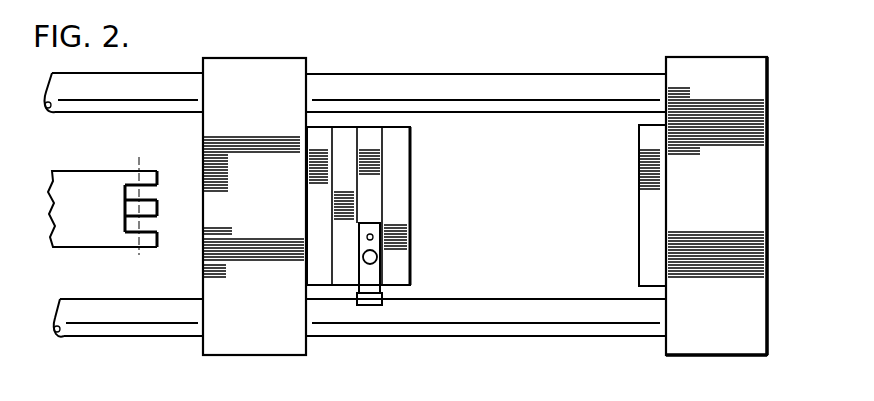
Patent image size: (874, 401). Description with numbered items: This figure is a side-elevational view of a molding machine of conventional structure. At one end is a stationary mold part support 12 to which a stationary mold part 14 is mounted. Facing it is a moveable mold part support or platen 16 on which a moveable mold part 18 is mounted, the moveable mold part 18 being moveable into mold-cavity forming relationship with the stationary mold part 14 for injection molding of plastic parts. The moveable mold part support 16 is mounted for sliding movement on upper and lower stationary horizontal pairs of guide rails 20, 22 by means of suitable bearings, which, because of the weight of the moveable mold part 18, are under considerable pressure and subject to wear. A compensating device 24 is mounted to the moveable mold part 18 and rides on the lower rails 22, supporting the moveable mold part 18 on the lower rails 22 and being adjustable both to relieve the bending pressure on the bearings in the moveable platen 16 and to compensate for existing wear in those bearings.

The stationary mold part support 12 is at (757, 105).
The stationary mold part 14 is at (645, 236).
The moveable mold part support or platen 16 is at (248, 66).
The moveable mold part 18 is at (397, 200).
The upper guide rails 20 is at (572, 82).
The lower guide rails 22 is at (514, 310).
The compensating device 24 is at (372, 278).